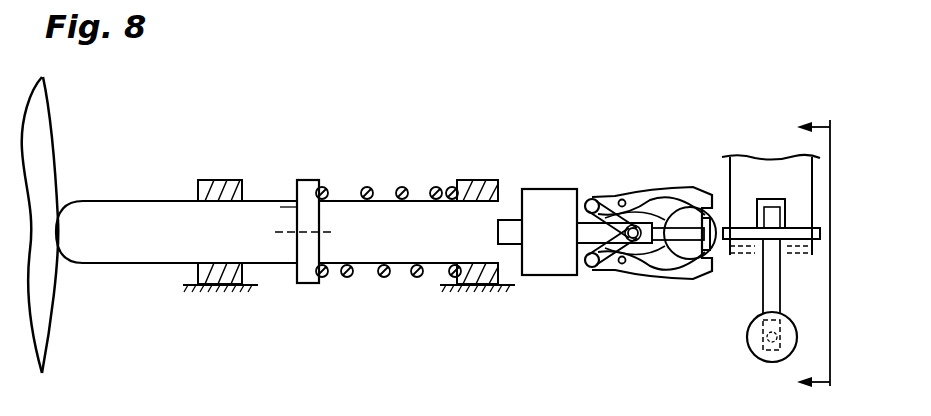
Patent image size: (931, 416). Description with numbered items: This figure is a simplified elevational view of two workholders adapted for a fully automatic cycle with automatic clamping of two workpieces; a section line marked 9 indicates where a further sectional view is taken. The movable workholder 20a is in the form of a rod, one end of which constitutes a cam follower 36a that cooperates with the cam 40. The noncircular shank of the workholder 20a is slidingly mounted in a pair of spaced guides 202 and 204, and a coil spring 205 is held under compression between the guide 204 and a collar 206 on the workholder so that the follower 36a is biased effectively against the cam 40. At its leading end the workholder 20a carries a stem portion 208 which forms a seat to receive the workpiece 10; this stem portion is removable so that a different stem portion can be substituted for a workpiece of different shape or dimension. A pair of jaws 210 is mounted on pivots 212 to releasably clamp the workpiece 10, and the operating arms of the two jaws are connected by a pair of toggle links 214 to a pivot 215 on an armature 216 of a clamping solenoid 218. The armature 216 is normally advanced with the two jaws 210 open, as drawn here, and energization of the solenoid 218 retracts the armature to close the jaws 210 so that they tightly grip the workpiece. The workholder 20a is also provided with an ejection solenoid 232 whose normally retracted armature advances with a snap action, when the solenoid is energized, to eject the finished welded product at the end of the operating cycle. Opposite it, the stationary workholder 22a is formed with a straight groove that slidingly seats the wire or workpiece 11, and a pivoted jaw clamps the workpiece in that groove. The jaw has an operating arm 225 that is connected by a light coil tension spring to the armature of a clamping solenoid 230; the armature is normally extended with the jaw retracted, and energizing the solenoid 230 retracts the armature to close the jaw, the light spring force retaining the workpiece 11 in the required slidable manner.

The cam 40 is at (40, 143).
The cam follower 36a is at (73, 213).
The workholder 20a is at (266, 218).
The collar 206 is at (308, 187).
The guide 202 is at (222, 284).
The coil spring 205 is at (347, 278).
The guide 204 is at (478, 278).
The clamping solenoid 218 is at (540, 195).
The armature 216 is at (577, 235).
The toggle links 214 is at (576, 265).
The pivots 212 is at (622, 199).
The jaws 210 is at (637, 197).
The pivot 215 is at (638, 214).
The workpiece 10 is at (692, 187).
The stem portion 208 is at (660, 265).
The ejection solenoid 232 is at (676, 258).
The stationary workholder 22a is at (738, 172).
The workpiece 11 is at (745, 225).
The operating arm 225 is at (775, 302).
The clamping solenoid 230 is at (750, 355).
The section line 9- 9 is at (814, 251).